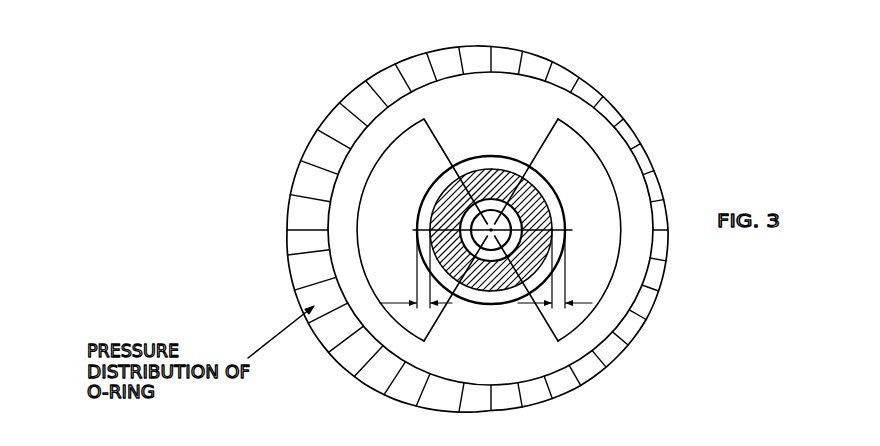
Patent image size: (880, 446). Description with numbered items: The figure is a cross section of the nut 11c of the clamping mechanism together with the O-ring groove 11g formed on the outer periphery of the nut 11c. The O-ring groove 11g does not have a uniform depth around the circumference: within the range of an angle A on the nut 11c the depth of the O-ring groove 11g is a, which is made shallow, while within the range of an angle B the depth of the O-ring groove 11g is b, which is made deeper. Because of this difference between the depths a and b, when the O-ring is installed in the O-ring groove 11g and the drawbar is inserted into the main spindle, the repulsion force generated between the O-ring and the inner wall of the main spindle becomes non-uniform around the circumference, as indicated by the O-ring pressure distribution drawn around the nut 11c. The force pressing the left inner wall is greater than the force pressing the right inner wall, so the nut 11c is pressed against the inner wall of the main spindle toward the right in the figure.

The O-ring groove 11g is at (498, 158).
The nut 11c is at (546, 197).
The depth of the O-ring groove within angle A a is at (416, 269).
The depth of the O-ring groove within angle B b is at (555, 269).
The angle A is at (377, 230).
The angle B is at (589, 230).